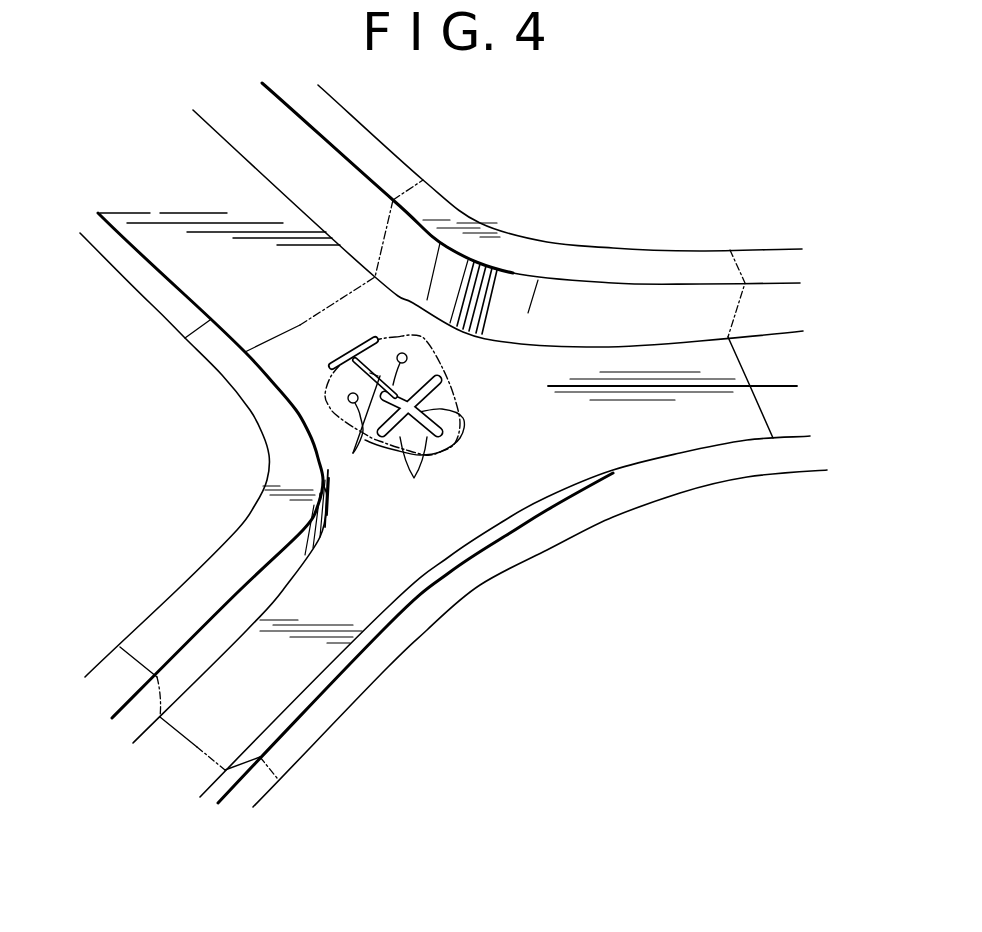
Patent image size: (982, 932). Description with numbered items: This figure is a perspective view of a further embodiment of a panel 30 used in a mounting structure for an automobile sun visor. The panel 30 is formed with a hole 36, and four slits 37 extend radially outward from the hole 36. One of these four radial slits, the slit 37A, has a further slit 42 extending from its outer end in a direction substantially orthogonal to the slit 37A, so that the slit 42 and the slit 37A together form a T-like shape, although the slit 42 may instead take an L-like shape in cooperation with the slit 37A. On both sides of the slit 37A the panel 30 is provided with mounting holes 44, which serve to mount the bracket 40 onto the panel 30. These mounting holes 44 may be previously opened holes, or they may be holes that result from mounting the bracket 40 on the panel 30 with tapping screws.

The panel 30 is at (448, 277).
The hole 36 is at (466, 417).
The slits 37 is at (410, 444).
The slit 37A is at (368, 374).
The bracket 40 is at (450, 387).
The slit 42 is at (375, 338).
The mounting holes 44 is at (355, 430).